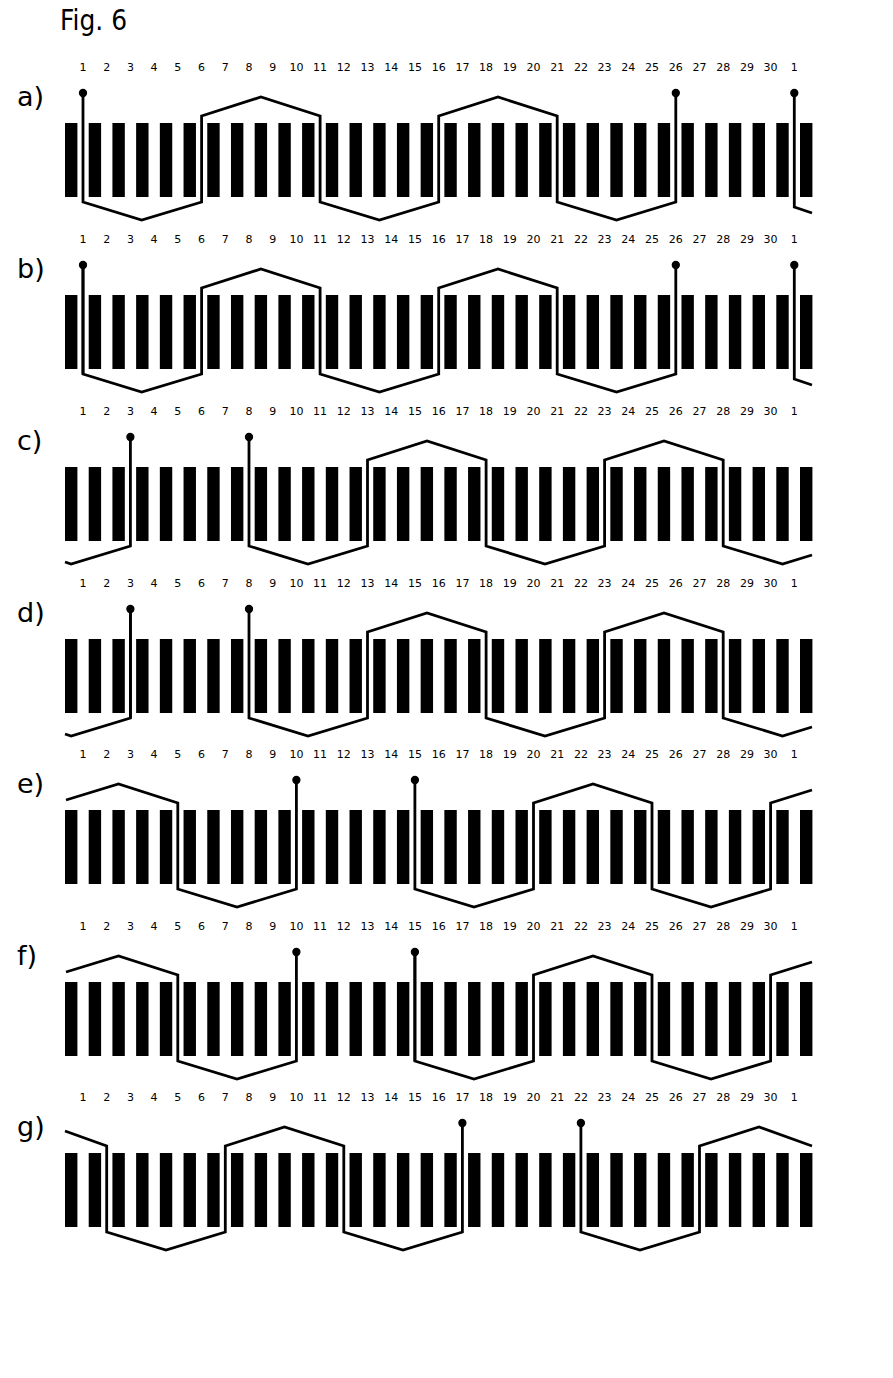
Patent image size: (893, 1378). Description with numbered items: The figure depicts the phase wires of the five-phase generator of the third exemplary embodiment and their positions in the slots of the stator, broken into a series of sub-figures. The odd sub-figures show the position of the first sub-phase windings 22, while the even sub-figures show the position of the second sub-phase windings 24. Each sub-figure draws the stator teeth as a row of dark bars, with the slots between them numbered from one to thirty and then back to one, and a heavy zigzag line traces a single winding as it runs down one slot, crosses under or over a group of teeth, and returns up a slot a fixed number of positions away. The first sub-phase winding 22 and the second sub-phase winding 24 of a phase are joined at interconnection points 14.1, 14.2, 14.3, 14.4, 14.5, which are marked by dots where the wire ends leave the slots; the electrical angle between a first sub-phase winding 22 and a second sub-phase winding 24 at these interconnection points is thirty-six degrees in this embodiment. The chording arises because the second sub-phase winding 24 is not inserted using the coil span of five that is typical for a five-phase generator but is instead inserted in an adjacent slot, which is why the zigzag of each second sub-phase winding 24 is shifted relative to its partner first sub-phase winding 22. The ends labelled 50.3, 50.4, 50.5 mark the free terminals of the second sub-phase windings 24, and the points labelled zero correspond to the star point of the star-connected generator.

The first sub-phase winding 22 is at (66, 85).
The second sub-phase winding 24 is at (66, 257).
The interconnection point 14.1 is at (446, 148).
The interconnection point 14.2 is at (438, 492).
The interconnection point 14.3 is at (439, 577).
The interconnection point 14.4 is at (438, 921).
The interconnection point 14.5 is at (439, 1007).
The connection point 50.3 is at (98, 316).
The connection point 50.4 is at (145, 660).
The connection point 50.5 is at (429, 1003).